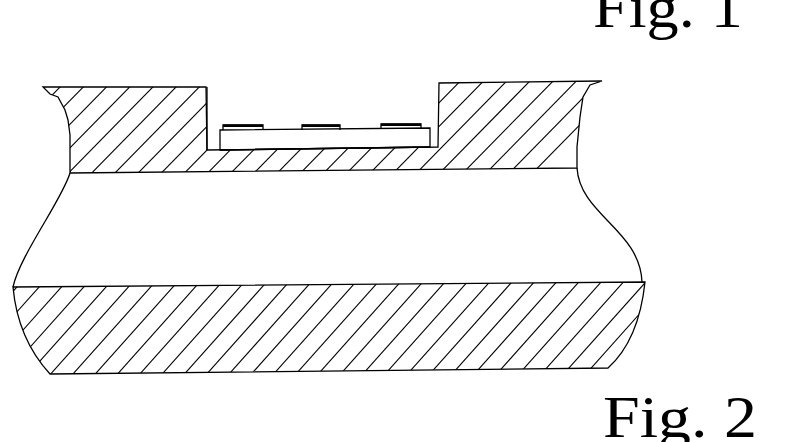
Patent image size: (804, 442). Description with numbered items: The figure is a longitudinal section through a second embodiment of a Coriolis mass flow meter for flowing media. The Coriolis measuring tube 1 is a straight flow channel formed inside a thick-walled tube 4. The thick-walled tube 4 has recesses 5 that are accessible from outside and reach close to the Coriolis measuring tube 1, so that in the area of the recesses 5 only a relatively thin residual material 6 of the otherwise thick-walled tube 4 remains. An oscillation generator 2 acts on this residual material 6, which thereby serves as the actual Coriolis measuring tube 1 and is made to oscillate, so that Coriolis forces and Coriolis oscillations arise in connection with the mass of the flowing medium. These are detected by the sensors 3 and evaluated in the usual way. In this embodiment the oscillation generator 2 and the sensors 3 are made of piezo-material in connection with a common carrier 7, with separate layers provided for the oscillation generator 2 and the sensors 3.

The Coriolis measuring tube 1 is at (485, 282).
The oscillation generator 2 is at (323, 125).
The sensor 3 is at (240, 125).
The thick-walled tube 4 is at (508, 143).
The recesses 5 is at (207, 116).
The residual material 6 is at (285, 158).
The common carrier 7 is at (361, 131).